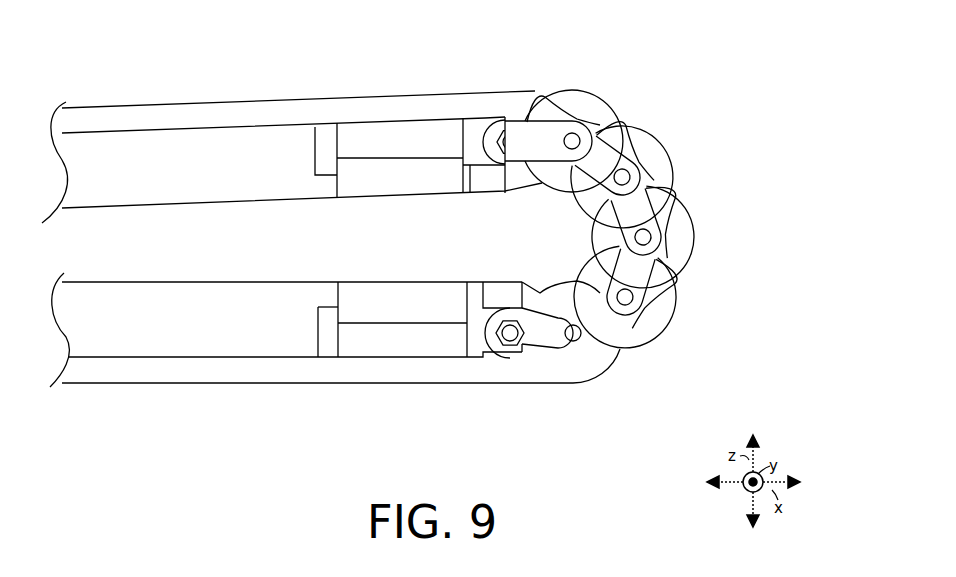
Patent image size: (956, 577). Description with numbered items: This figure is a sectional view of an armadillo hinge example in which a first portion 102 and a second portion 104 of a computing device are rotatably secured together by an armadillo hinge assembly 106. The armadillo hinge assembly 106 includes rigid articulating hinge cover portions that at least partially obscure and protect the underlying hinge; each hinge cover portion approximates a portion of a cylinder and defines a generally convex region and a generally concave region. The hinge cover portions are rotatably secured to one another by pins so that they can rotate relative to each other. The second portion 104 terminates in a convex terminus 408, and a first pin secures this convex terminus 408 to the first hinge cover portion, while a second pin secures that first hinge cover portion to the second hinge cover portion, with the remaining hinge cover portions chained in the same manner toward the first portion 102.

The first portion 102 is at (177, 191).
The second portion 104 is at (178, 341).
The armadillo hinge assembly 106 is at (625, 186).
The convex terminus 408 is at (612, 368).